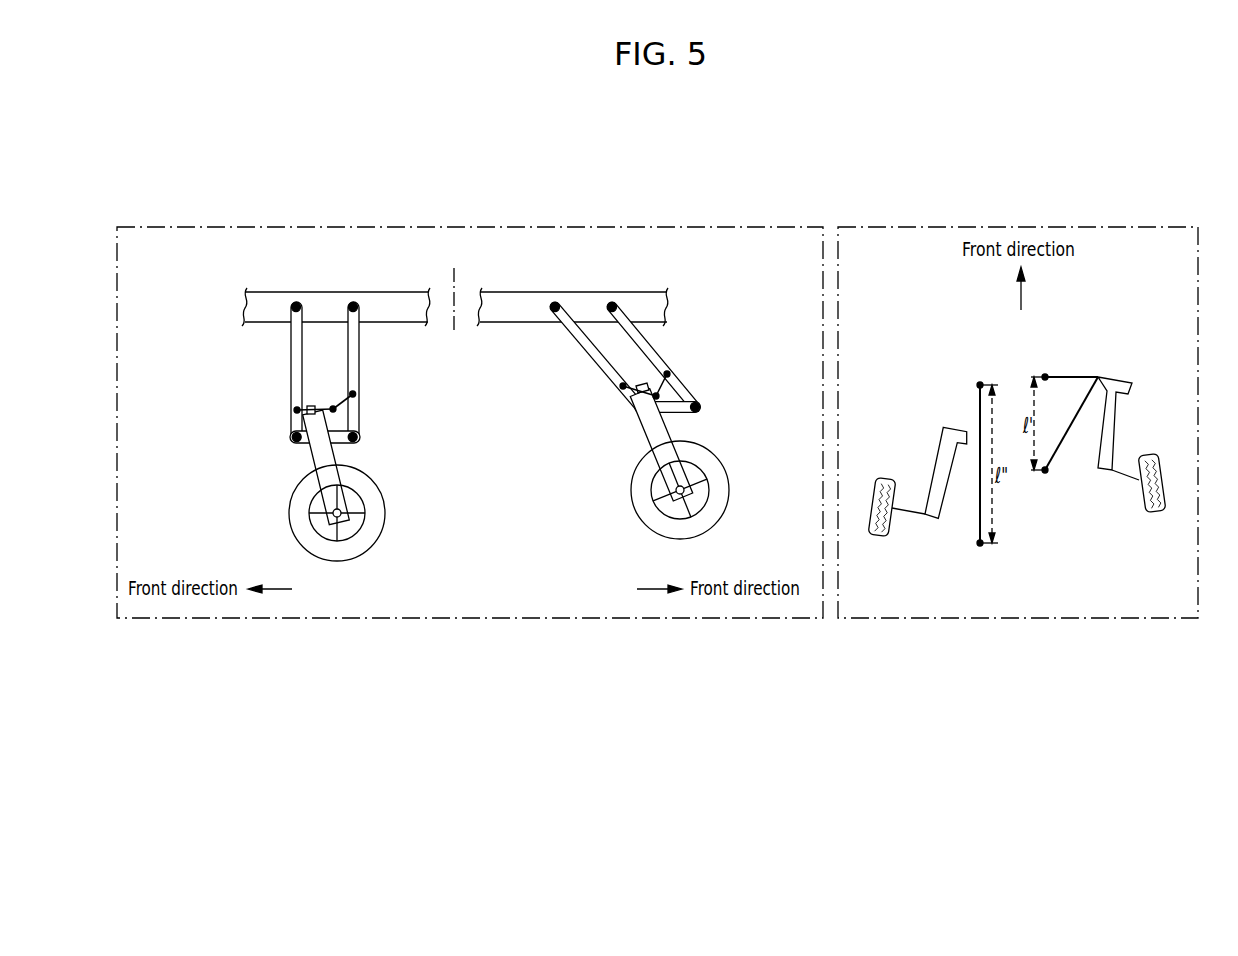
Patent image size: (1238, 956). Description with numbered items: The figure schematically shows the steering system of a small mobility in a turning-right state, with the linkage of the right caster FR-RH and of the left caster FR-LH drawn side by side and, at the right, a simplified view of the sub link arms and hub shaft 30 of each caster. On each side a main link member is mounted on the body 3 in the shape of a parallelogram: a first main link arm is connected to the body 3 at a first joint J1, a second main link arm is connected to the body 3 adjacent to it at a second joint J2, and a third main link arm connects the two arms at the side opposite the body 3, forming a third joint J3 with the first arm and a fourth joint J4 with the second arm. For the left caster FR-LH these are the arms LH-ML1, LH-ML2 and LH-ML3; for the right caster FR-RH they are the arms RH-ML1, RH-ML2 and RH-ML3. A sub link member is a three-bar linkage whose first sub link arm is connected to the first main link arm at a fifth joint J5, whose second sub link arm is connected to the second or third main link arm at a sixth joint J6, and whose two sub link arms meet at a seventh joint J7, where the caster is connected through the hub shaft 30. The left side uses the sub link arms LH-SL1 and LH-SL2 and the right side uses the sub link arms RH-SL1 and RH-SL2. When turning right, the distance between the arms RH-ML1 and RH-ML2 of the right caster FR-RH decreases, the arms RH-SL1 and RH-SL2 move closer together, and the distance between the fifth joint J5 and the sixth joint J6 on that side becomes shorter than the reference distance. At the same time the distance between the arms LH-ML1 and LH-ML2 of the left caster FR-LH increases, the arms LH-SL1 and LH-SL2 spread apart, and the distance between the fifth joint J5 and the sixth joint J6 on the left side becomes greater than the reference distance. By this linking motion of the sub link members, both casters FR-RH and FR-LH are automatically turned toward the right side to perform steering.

The body 3 is at (403, 303).
The hub shaft 30 is at (328, 455).
The first joint J1 is at (296, 302).
The second joint J2 is at (353, 302).
The third joint J3 is at (295, 437).
The fourth joint J4 is at (358, 440).
The fifth joint J5 is at (297, 410).
The sixth joint J6 is at (352, 393).
The seventh joint J7 is at (340, 413).
The first main link arm of the left caster LH-ML1 is at (297, 343).
The second main link arm of the left caster LH-ML2 is at (355, 352).
The third main link arm of the left caster LH-ML3 is at (307, 443).
The first sub link arm of the left caster LH-SL1 is at (310, 407).
The second sub link arm of the left caster LH-SL2 is at (345, 402).
The first main link arm of the right caster RH-ML1 is at (645, 342).
The second main link arm of the right caster RH-ML2 is at (580, 342).
The third main link arm of the right caster RH-ML3 is at (678, 410).
The first sub link arm of the right caster RH-SL1 is at (667, 384).
The second sub link arm of the right caster RH-SL2 is at (634, 387).
The left caster FR-LH is at (377, 498).
The right caster FR-RH is at (710, 523).